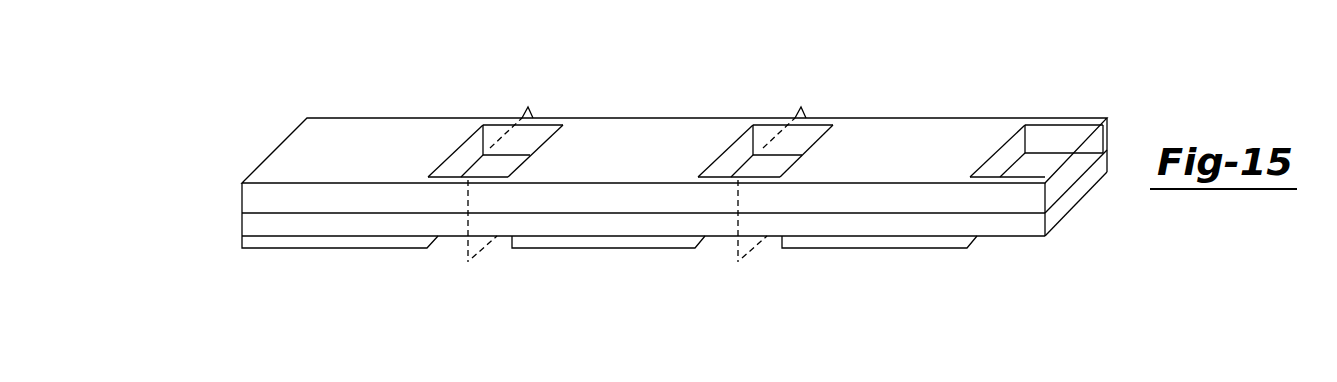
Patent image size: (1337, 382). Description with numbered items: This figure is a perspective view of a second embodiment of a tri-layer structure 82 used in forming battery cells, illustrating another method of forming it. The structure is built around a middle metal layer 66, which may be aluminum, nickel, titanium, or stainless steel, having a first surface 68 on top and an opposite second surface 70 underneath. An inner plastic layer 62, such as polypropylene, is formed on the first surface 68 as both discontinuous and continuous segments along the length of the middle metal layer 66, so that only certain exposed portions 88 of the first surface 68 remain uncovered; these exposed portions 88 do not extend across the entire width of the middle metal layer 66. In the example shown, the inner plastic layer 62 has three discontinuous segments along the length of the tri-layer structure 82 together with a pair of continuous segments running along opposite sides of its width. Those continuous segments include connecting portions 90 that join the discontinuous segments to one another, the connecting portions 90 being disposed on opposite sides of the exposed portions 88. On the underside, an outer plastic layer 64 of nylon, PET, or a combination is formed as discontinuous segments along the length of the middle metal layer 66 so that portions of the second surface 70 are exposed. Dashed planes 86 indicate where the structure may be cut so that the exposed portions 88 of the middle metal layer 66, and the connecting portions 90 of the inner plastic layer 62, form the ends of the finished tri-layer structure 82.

The tri-layer structure 82 is at (303, 88).
The inner plastic layer 62 is at (371, 135).
The first surface 68 is at (615, 212).
The middle metal layer 66 is at (337, 227).
The second surface 70 is at (605, 237).
The outer plastic layer 64 is at (278, 241).
The planes 86 is at (457, 253).
The exposed portions 88 is at (512, 165).
The connecting portions 90 is at (455, 175).